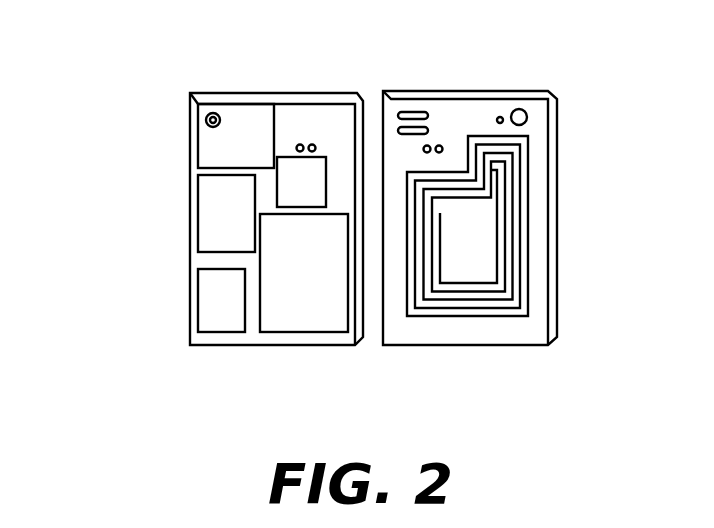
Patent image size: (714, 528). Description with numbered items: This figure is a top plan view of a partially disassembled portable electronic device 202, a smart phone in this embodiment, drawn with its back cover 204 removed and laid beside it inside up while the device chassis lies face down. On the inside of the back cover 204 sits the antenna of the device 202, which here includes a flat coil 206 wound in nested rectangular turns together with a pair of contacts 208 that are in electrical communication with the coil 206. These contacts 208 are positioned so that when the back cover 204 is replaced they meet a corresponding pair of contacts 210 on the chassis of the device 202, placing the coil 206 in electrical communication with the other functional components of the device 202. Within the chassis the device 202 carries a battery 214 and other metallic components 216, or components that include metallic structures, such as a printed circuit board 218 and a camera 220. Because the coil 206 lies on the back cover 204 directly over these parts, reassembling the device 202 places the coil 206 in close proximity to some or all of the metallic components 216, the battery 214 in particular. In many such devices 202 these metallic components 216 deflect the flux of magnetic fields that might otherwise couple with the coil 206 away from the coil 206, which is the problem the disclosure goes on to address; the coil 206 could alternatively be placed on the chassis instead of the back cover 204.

The device 202 is at (163, 66).
The back cover 204 is at (517, 72).
The coil 206 is at (467, 318).
The pair of contacts 208 is at (437, 143).
The corresponding pair of contacts 210 is at (298, 141).
The battery 214 is at (280, 334).
The metallic components 216 is at (158, 168).
The printed circuit board 218 is at (196, 217).
The camera 220 is at (206, 126).